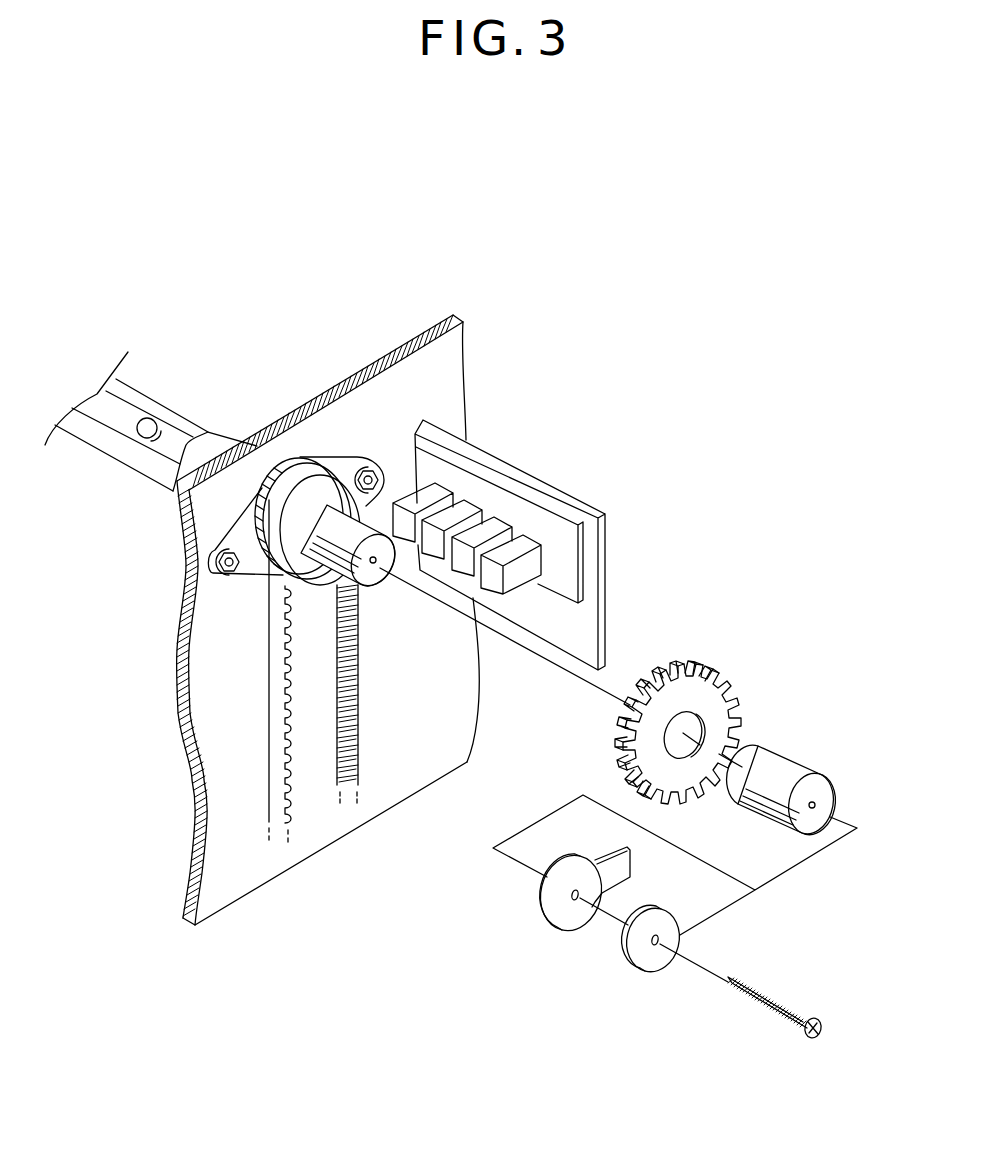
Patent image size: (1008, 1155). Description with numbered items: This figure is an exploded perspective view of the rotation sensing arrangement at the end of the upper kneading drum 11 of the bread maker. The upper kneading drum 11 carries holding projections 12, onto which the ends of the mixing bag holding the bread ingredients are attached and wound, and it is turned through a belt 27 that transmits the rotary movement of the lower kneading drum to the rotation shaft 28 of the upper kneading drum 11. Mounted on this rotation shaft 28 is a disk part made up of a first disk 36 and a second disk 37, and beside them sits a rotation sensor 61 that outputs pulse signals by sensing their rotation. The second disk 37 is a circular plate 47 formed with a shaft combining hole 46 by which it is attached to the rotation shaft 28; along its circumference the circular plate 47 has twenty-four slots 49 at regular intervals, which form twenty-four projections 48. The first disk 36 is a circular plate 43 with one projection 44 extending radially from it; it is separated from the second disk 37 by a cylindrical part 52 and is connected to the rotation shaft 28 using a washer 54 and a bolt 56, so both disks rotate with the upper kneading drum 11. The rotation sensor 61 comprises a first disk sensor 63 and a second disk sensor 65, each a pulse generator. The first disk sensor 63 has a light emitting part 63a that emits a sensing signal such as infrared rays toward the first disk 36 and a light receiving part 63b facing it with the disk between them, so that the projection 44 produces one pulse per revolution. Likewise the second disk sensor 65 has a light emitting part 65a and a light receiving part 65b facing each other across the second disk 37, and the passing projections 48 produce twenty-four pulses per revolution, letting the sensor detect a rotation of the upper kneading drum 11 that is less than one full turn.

The upper kneading drum 11 is at (128, 378).
The holding projections 12 is at (158, 428).
The belt 27 is at (271, 681).
The rotation shaft 28 is at (328, 520).
The first disk 36 is at (571, 962).
The second disk 37 is at (707, 674).
The circular plate 43 is at (562, 925).
The projection 44 is at (622, 918).
The shaft combining hole 46 is at (738, 692).
The circular plate 47 is at (700, 720).
The projections 48 is at (700, 674).
The slots 49 is at (678, 669).
The cylindrical part 52 is at (820, 771).
The washer 54 is at (654, 950).
The bolt 56 is at (788, 1000).
The rotation sensor 61 is at (539, 501).
The first disk sensor 63 is at (569, 497).
The light emitting part 63a is at (523, 540).
The light receiving part 63b is at (492, 520).
The second disk sensor 65 is at (491, 453).
The light emitting part 65a is at (458, 506).
The light receiving part 65b is at (427, 493).